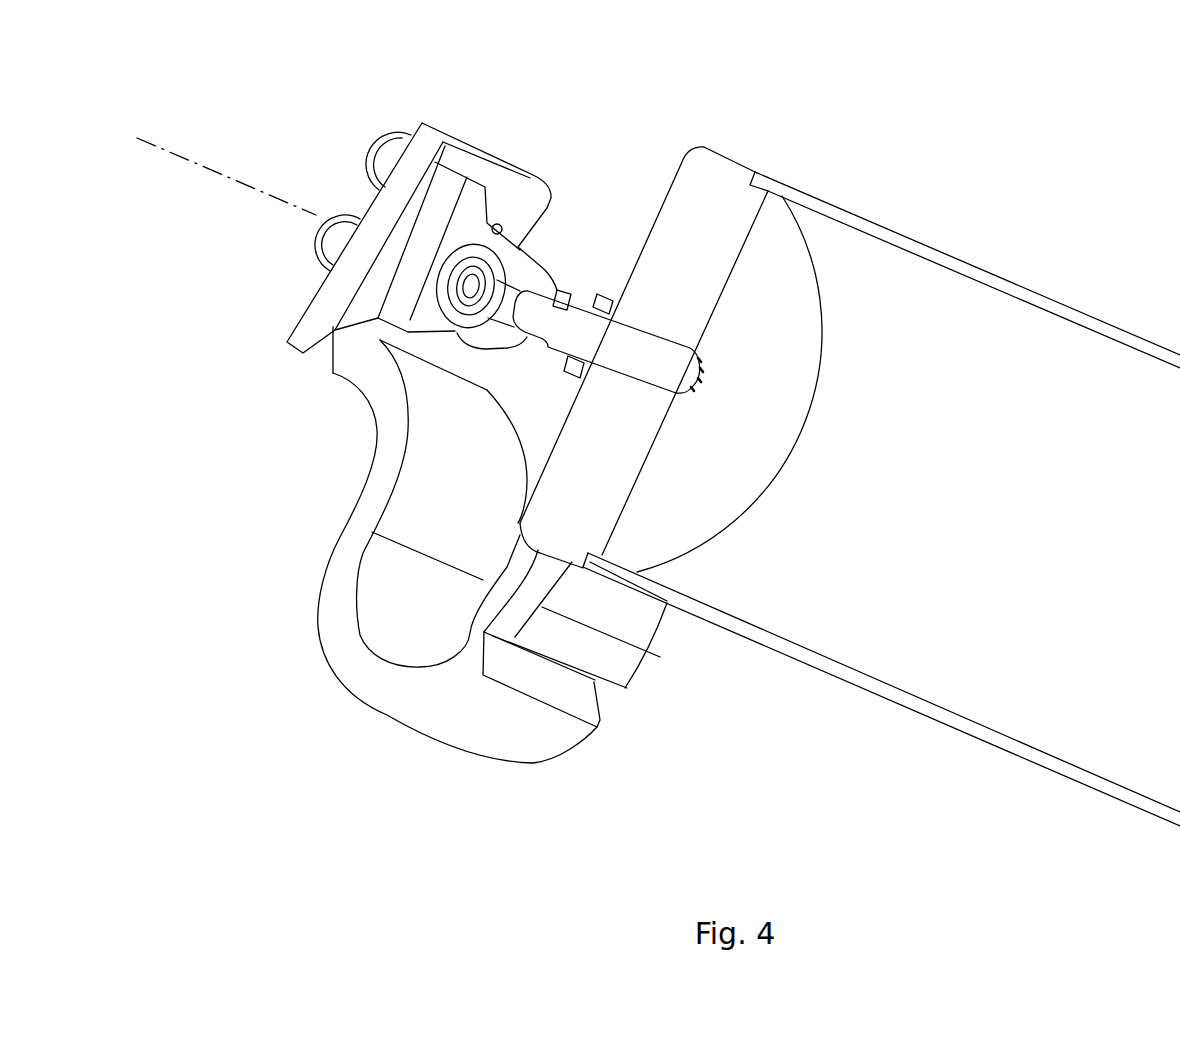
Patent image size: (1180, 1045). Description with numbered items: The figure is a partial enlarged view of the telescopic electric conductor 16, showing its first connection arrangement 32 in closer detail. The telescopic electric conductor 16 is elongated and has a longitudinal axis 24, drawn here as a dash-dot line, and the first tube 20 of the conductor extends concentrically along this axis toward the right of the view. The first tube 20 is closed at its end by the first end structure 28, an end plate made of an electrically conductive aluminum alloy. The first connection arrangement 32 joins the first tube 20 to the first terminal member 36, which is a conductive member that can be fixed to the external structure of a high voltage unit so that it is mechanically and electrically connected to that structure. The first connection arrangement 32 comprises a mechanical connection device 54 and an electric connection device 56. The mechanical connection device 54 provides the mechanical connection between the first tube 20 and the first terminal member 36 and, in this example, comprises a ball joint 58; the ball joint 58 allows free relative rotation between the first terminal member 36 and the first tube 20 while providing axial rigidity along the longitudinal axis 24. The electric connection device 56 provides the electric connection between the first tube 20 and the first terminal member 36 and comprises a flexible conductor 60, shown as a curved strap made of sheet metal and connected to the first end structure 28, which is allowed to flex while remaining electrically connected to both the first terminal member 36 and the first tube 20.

The telescopic electric conductor 16 is at (1049, 178).
The first tube 20 is at (1106, 328).
The longitudinal axis 24 is at (181, 157).
The first end structure 28 is at (708, 188).
The first connection arrangement 32 is at (452, 396).
The first terminal member 36 is at (327, 302).
The mechanical connection device 54 is at (597, 210).
The electric connection device 56 is at (399, 551).
The ball joint 58 is at (472, 287).
The flexible conductor 60 is at (348, 557).